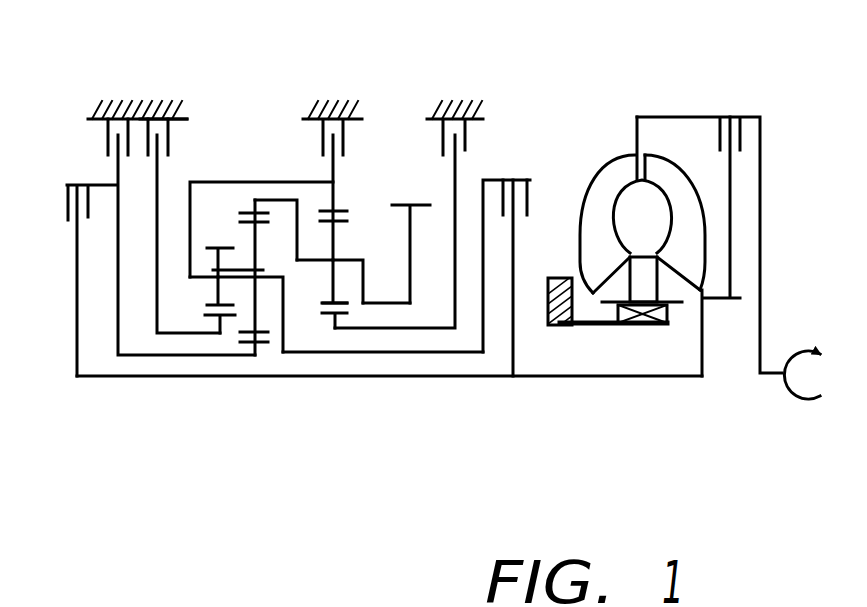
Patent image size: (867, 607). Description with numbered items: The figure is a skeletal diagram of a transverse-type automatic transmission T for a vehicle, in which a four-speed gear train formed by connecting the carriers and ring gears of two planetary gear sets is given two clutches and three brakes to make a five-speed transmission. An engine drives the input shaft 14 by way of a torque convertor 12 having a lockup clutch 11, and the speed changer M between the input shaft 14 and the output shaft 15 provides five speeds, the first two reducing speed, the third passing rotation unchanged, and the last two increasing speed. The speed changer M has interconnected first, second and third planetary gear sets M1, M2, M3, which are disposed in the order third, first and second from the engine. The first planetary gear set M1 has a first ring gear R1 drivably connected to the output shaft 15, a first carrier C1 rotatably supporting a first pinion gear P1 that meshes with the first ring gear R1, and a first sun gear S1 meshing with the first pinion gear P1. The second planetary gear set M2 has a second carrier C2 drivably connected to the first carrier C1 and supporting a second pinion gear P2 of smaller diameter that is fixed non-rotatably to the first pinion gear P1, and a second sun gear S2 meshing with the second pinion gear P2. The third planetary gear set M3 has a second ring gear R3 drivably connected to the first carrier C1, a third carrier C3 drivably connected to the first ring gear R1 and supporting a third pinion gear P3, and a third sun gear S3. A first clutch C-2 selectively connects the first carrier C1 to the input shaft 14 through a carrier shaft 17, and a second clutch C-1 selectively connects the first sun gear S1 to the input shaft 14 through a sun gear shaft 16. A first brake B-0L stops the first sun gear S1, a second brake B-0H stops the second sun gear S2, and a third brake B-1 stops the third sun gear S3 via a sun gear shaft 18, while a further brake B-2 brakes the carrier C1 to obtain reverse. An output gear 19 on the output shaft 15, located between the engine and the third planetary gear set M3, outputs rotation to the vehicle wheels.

The automatic transmission T is at (400, 70).
The first brake B-0L is at (107, 138).
The second brake B-0H is at (207, 95).
The brake B-2 is at (317, 135).
The third brake B-1 is at (440, 128).
The second clutch C-1 is at (66, 195).
The first clutch C-2 is at (530, 176).
The first ring gear R1 is at (250, 195).
The second carrier C2 is at (213, 249).
The first pinion gear P1 is at (256, 222).
The second pinion gear P2 is at (215, 305).
The first carrier C1 is at (282, 273).
The second ring gear R3 is at (345, 212).
The third pinion gear P3 is at (352, 230).
The third carrier C3 is at (355, 262).
The third sun gear S3 is at (326, 310).
The second sun gear S2 is at (226, 332).
The first sun gear S1 is at (260, 343).
The output gear 19 is at (418, 205).
The output shaft 15 is at (397, 313).
The sun gear shaft 16 is at (135, 356).
The carrier shaft 17 is at (388, 353).
The sun gear shaft 18 is at (440, 330).
The input shaft 14 is at (495, 377).
The torque convertor 12 is at (637, 130).
The lockup clutch 11 is at (700, 119).
The first planetary gear set M1 is at (259, 402).
The second planetary gear set M2 is at (215, 408).
The third planetary gear set M3 is at (337, 398).
The speed changer M is at (362, 468).